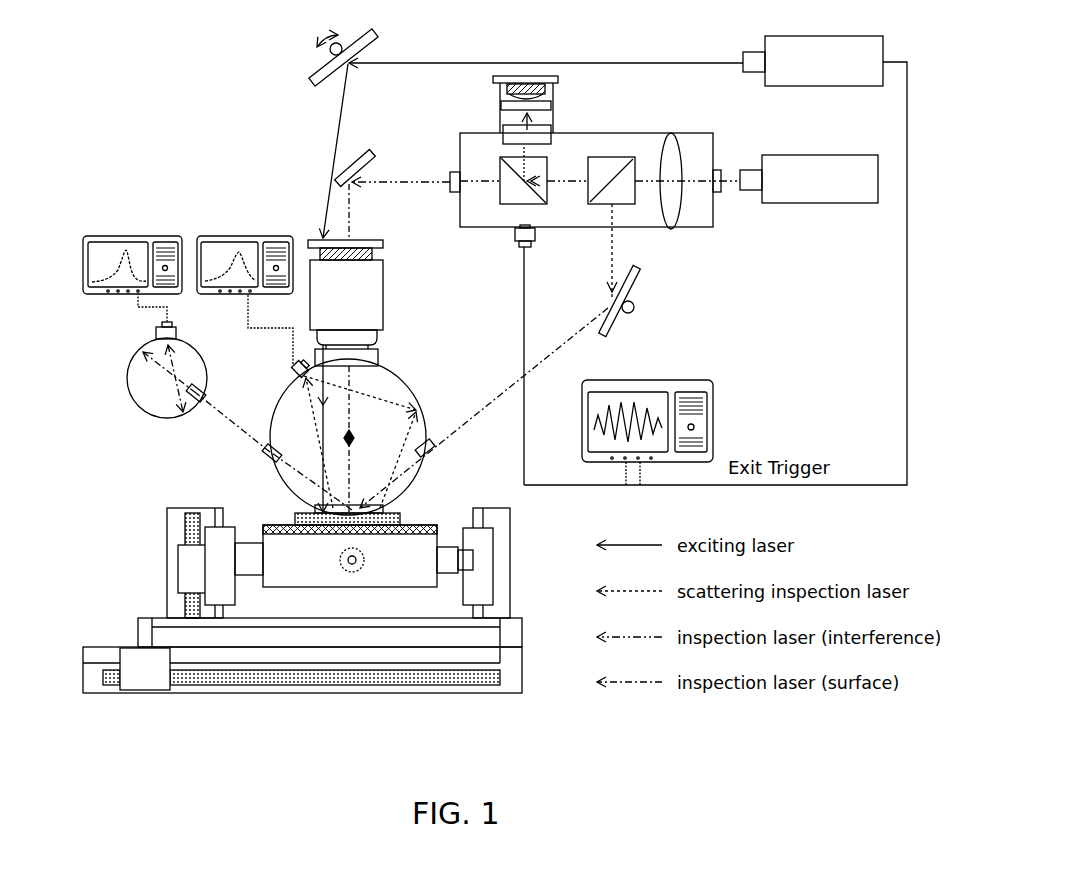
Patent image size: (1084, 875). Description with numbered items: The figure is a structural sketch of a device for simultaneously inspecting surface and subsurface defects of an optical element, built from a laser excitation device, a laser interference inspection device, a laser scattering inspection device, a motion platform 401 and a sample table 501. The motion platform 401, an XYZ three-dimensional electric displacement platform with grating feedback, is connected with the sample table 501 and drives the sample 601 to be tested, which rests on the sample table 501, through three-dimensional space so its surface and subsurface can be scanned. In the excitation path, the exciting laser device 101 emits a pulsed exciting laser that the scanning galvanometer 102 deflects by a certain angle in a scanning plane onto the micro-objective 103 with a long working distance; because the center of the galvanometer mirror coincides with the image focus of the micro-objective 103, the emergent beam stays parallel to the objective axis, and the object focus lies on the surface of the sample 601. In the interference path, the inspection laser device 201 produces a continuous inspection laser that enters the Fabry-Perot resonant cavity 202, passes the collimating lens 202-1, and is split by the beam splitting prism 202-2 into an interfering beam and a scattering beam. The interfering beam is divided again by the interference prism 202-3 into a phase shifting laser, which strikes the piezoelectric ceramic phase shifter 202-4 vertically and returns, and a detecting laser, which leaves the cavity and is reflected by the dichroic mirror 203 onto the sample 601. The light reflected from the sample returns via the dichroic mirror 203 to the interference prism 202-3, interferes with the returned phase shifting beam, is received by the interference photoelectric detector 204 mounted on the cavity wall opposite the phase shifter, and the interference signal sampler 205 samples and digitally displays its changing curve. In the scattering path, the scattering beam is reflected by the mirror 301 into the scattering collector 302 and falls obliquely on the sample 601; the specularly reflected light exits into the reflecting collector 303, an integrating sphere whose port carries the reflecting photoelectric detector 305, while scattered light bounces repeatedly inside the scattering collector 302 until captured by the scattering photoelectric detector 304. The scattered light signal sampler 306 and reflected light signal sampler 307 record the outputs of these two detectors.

The exciting laser device 101 is at (868, 54).
The scanning galvanometer 102 is at (310, 79).
The micro-objective with a long working distance 103 is at (350, 308).
The inspection laser device 201 is at (868, 180).
The Fabry-Perot resonant cavity 202 is at (720, 163).
The collimating lens 202-1 is at (672, 156).
The beam splitting prism 202-2 is at (605, 166).
The interference prism 202-3 is at (538, 166).
The piezoelectric ceramic phase shifter 202-4 is at (498, 104).
The dichroic mirror 203 is at (334, 176).
The interference photoelectric detector 204 is at (532, 246).
The interference signal sampler 205 is at (703, 427).
The mirror 301 is at (618, 333).
The scattering collector 302 is at (398, 396).
The reflecting collector 303 is at (150, 400).
The scattering photoelectric detector 304 is at (292, 375).
The reflecting photoelectric detector 305 is at (152, 334).
The scattered light signal sampler 306 is at (240, 255).
The reflected light signal sampler 307 is at (112, 253).
The motion platform 401 is at (152, 641).
The sample table 501 is at (282, 545).
The sample to be tested 601 is at (405, 522).